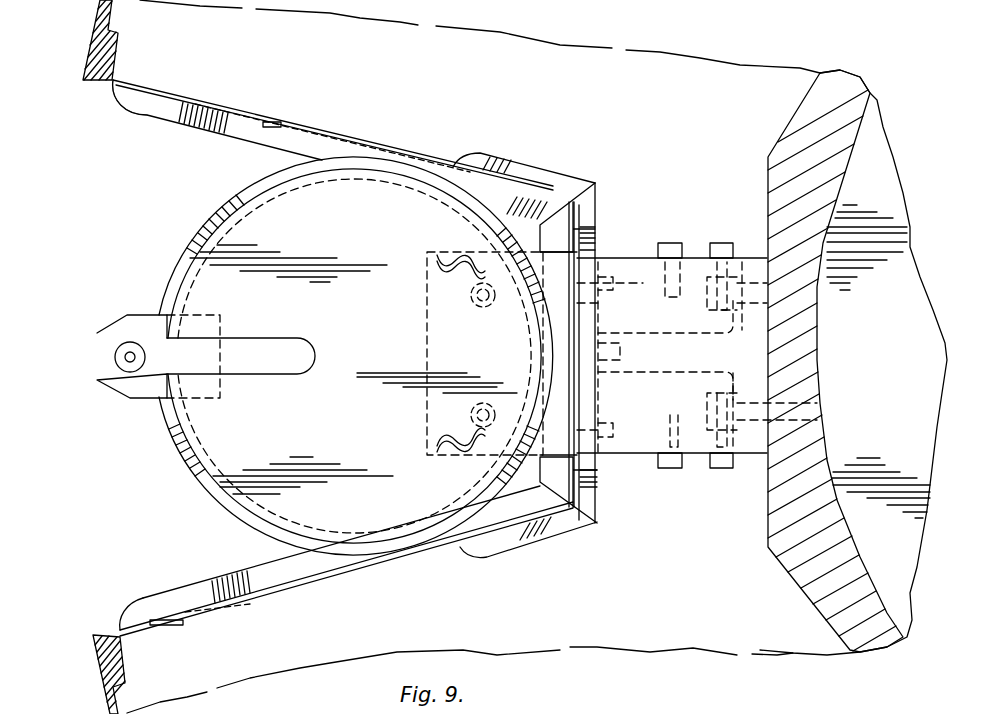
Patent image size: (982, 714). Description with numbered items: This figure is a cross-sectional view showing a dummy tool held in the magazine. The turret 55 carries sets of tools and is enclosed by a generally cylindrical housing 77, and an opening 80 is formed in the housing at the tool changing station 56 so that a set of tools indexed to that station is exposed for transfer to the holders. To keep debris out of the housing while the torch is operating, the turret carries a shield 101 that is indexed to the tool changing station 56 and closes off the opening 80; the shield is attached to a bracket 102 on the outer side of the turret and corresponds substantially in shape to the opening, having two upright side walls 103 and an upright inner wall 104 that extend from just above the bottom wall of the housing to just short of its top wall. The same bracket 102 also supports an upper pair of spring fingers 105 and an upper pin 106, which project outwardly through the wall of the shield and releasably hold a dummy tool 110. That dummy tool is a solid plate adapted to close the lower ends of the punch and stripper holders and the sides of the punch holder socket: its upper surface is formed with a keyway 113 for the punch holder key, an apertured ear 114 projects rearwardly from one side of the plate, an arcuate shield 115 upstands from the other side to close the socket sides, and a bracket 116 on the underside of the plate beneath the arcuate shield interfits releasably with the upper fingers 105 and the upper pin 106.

The turret 55 is at (787, 140).
The tool changing station 56 is at (120, 553).
The housing 77 is at (93, 46).
The opening 80 is at (114, 82).
The shield 101 is at (307, 128).
The bracket 102 is at (623, 275).
The upright side walls 103 is at (247, 123).
The upright inner wall 104 is at (573, 400).
The upper pair of spring fingers 105 is at (568, 222).
The upper pin 106 is at (598, 346).
The dummy tool 110 is at (187, 455).
The keyway 113 is at (258, 368).
The apertured ear 114 is at (113, 320).
The arcuate shield 115 is at (470, 227).
The bracket 116 is at (428, 345).